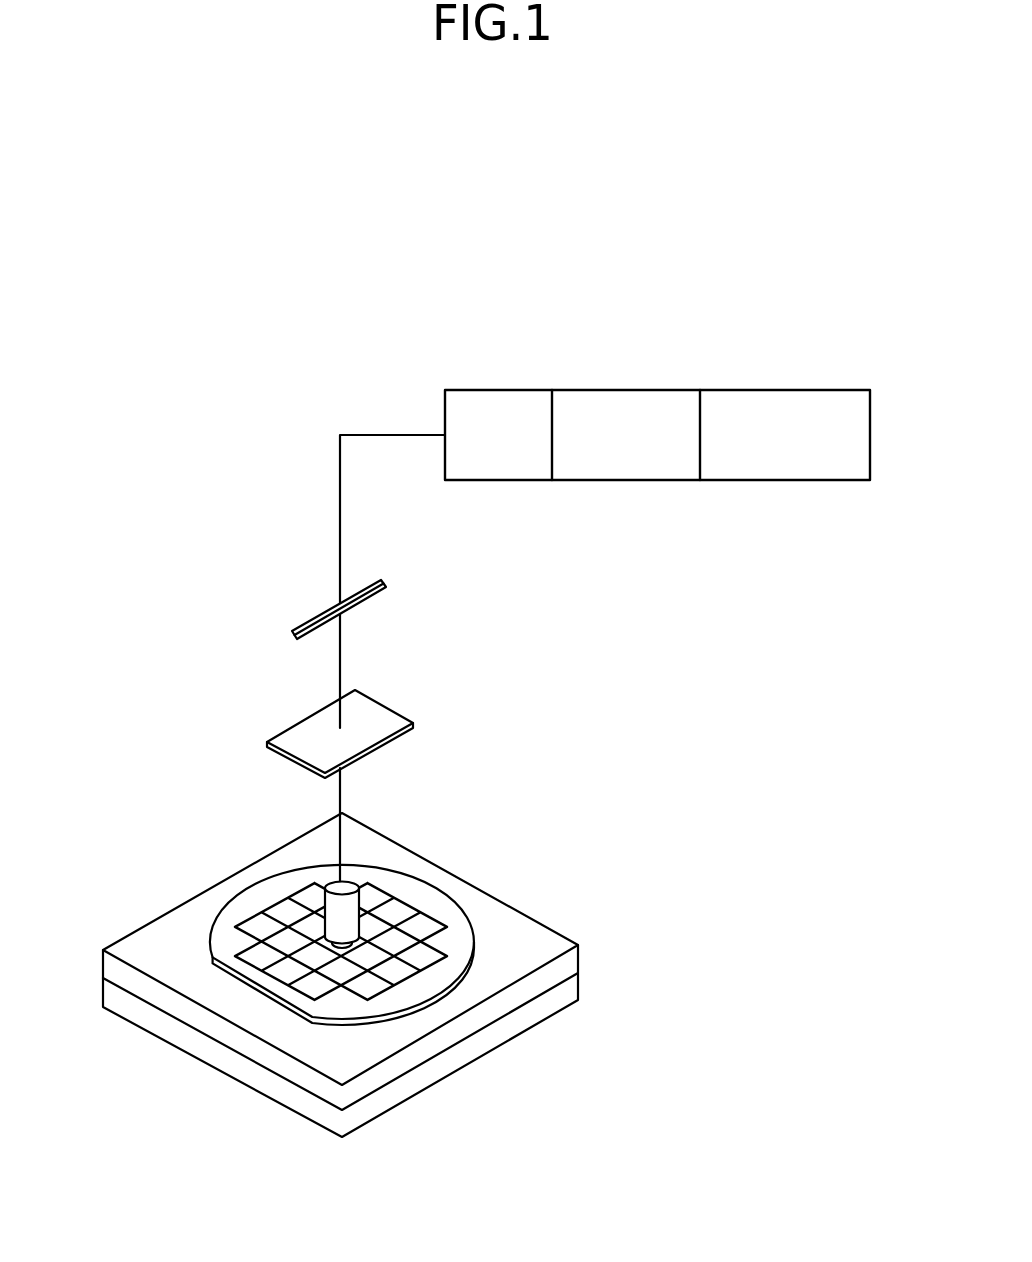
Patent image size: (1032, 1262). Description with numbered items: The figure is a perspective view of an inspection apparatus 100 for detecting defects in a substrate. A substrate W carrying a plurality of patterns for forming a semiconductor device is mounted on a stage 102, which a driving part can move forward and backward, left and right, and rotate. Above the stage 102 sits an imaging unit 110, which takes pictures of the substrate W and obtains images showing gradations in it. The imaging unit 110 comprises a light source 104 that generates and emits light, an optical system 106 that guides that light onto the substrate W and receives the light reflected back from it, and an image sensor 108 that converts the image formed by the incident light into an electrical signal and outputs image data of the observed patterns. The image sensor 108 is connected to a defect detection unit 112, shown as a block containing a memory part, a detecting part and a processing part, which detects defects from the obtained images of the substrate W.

The inspection apparatus 100 is at (519, 199).
The stage 102 is at (241, 1065).
The light source 104 is at (300, 736).
The optical system 106 is at (325, 908).
The image sensor 108 is at (295, 633).
The imaging unit 110 is at (80, 677).
The defect detection unit 112 is at (853, 371).
The substrate W is at (222, 942).